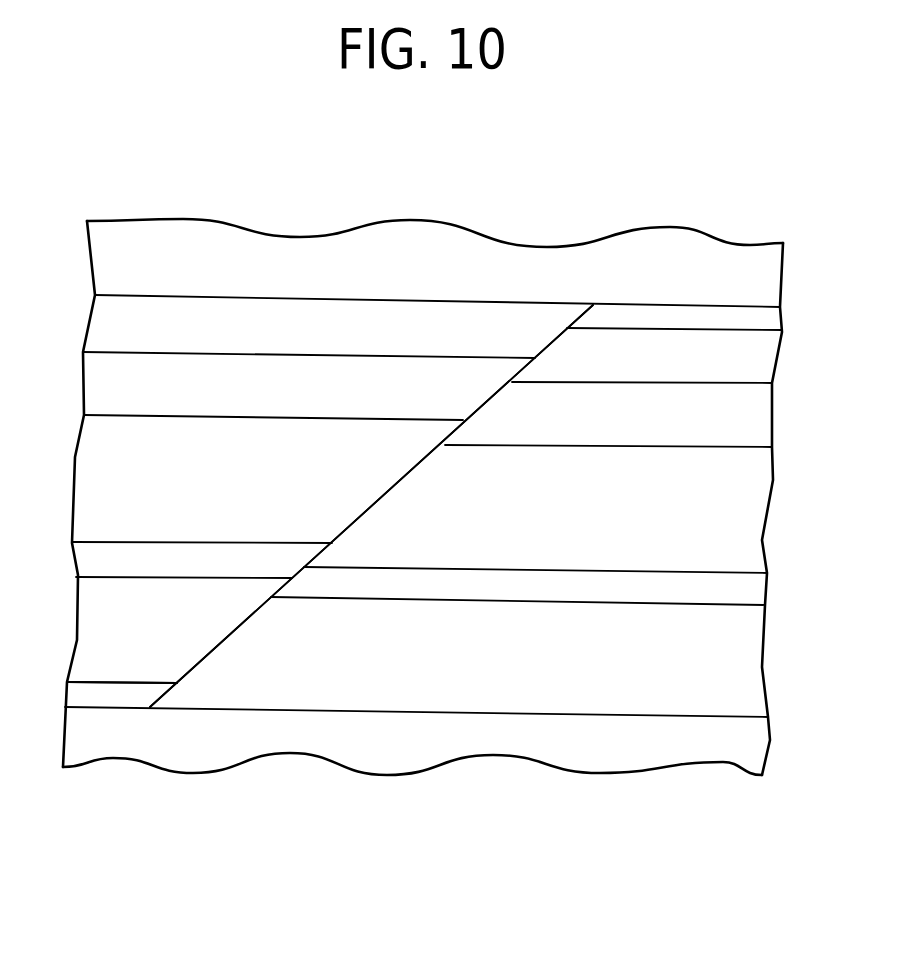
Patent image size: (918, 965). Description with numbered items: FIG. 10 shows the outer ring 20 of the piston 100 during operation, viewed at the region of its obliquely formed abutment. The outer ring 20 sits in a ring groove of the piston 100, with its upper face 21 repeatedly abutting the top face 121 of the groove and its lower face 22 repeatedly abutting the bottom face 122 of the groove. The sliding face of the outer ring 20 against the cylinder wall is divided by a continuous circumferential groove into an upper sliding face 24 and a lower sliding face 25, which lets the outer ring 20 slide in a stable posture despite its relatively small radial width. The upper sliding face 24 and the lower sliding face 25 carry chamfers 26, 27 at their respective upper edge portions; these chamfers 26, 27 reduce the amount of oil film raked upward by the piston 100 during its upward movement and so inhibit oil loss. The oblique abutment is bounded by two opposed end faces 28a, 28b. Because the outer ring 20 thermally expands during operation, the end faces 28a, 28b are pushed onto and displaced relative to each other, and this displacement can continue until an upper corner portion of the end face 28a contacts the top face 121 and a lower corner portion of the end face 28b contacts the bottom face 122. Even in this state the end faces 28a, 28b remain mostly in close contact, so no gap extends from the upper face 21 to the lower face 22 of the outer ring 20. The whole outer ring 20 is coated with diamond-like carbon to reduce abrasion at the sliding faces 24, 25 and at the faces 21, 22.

The piston 100 is at (680, 258).
The outer ring 20 is at (794, 336).
The upper face 21 is at (458, 298).
The top face 121 is at (636, 308).
The lower face 22 is at (88, 686).
The bottom face 122 is at (113, 704).
The upper sliding face 24 is at (110, 385).
The lower sliding face 25 is at (98, 642).
The chamfer 26 is at (115, 323).
The chamfer 27 is at (95, 554).
The end face 28a is at (374, 512).
The end face 28b is at (392, 475).